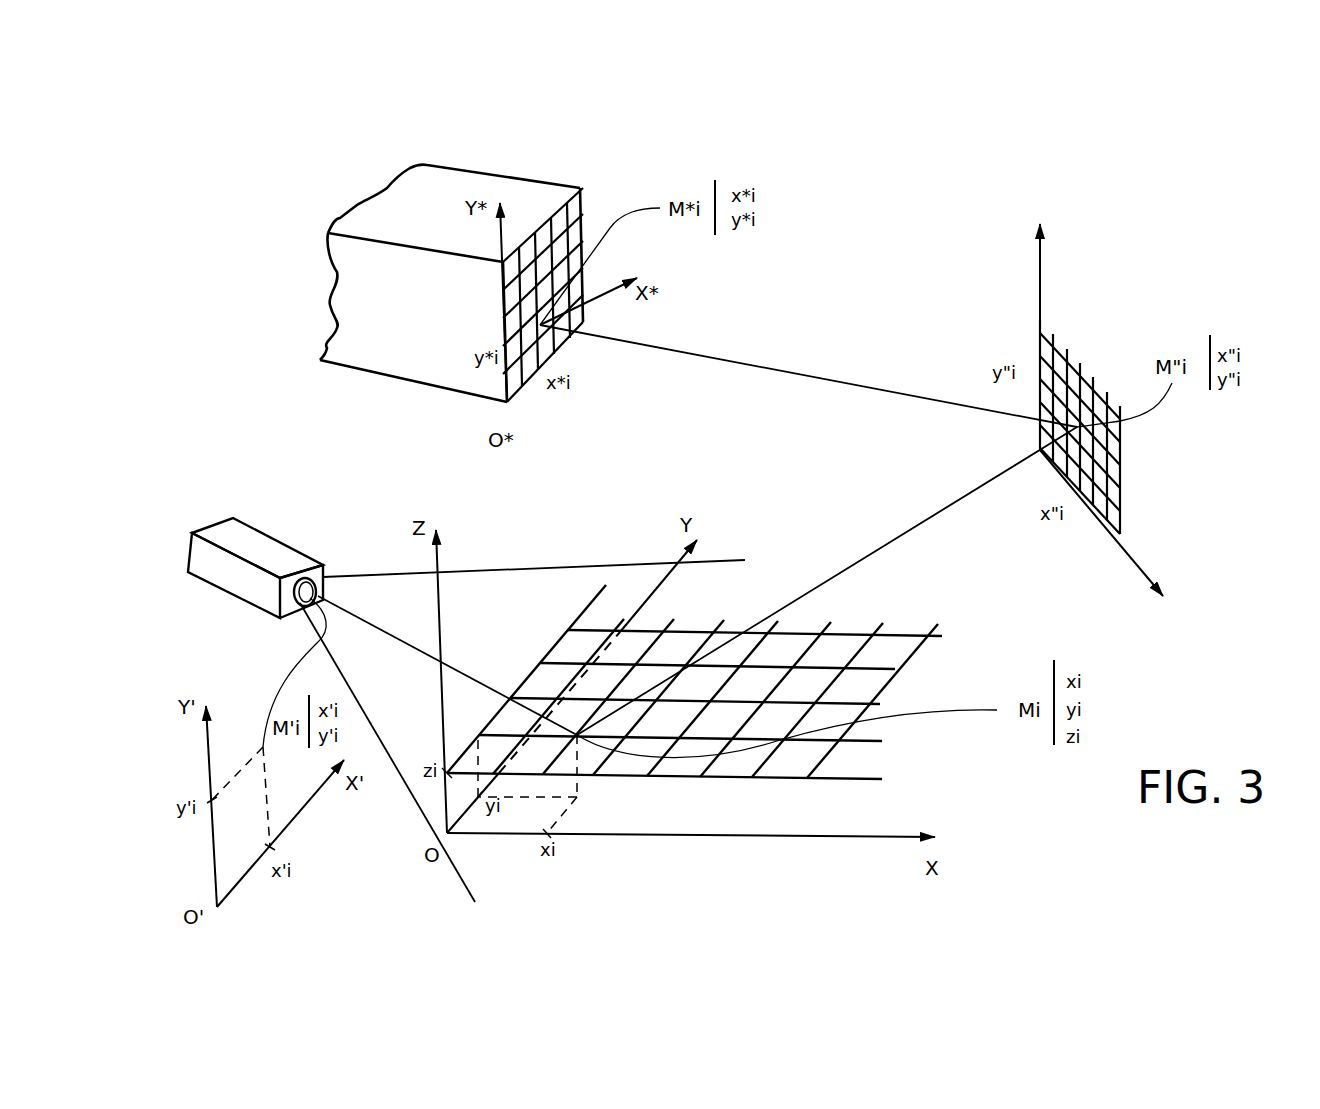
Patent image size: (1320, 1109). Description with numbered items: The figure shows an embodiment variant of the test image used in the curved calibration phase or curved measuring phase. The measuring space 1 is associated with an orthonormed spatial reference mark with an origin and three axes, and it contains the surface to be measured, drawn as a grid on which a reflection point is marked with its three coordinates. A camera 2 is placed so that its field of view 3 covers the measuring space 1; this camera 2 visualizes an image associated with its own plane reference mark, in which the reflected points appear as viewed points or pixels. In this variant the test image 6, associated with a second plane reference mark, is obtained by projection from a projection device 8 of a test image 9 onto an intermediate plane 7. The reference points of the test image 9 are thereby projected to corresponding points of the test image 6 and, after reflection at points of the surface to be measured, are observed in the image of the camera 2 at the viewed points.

The measuring space 1 is at (765, 810).
The camera 2 is at (258, 550).
The field of view 3 is at (498, 568).
The test image 6 is at (1092, 384).
The intermediate plane 7 is at (1098, 352).
The projection device 8 is at (408, 352).
The test image 9 is at (585, 290).